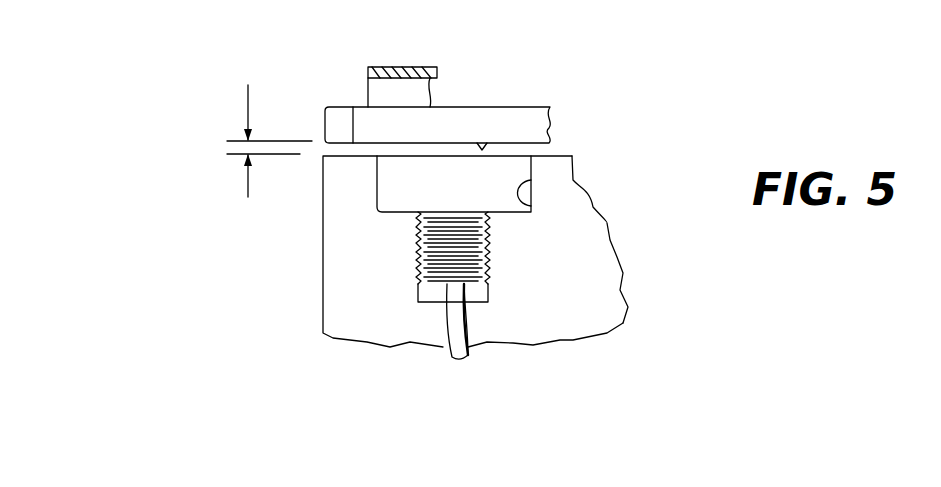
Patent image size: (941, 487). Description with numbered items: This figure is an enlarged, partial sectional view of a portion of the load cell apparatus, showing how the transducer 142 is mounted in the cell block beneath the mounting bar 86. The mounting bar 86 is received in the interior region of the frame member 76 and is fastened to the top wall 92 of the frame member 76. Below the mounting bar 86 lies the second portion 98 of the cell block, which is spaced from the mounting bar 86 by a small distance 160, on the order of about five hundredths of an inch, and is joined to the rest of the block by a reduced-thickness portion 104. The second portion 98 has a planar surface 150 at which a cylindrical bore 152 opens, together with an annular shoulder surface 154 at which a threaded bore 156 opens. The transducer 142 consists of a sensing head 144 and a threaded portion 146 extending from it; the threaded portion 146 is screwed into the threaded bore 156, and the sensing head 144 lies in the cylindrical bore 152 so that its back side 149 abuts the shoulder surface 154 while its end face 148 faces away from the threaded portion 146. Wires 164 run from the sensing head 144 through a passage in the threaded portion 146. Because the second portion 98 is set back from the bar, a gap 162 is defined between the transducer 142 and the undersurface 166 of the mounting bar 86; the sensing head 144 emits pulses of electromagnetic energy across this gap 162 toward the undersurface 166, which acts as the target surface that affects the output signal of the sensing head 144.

The frame member 76 is at (386, 92).
The mounting bar 86 is at (540, 128).
The top wall 92 is at (398, 72).
The second portion 98 is at (327, 266).
The reduced-thickness portion 104 is at (613, 280).
The transducer 142 is at (550, 200).
The sensing head 144 is at (507, 172).
The threaded portion 146 is at (470, 243).
The end face 148 is at (455, 156).
The back side 149 is at (398, 217).
The planar surface 150 is at (353, 107).
The cylindrical bore 152 is at (531, 206).
The annular shoulder surface 154 is at (403, 212).
The threaded bore 156 is at (489, 265).
The distance 160 is at (247, 107).
The gap 162 is at (322, 149).
The wires 164 is at (460, 332).
The undersurface 166 is at (490, 143).